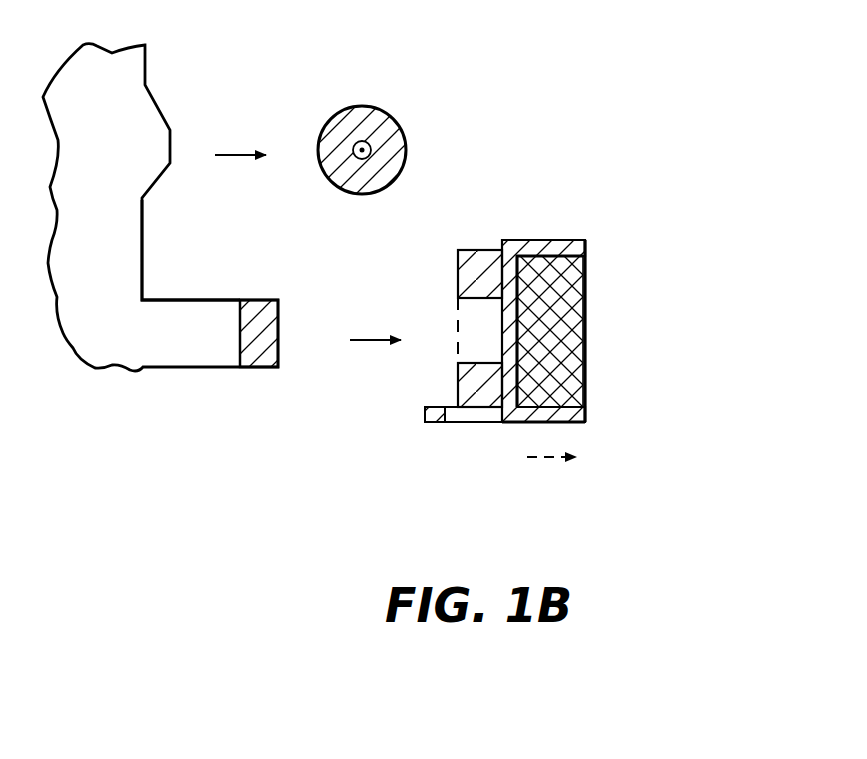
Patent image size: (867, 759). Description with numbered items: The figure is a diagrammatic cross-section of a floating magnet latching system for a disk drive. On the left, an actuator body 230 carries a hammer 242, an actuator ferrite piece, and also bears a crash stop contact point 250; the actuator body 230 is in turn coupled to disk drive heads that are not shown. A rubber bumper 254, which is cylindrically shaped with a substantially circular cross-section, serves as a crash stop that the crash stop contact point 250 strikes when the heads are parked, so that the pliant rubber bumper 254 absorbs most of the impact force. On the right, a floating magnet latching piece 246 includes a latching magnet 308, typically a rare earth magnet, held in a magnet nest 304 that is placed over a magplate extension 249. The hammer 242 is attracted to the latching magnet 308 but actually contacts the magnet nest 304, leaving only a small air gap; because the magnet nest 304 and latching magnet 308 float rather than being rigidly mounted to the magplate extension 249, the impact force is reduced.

The crash stop contact point 250 is at (158, 138).
The actuator body 230 is at (140, 267).
The hammer 242 is at (255, 367).
The rubber bumper 254 is at (388, 123).
The floating magnet latching piece 246 is at (636, 208).
The magplate extension 249 is at (480, 249).
The magnet nest 304 is at (533, 240).
The latching magnet 308 is at (585, 368).